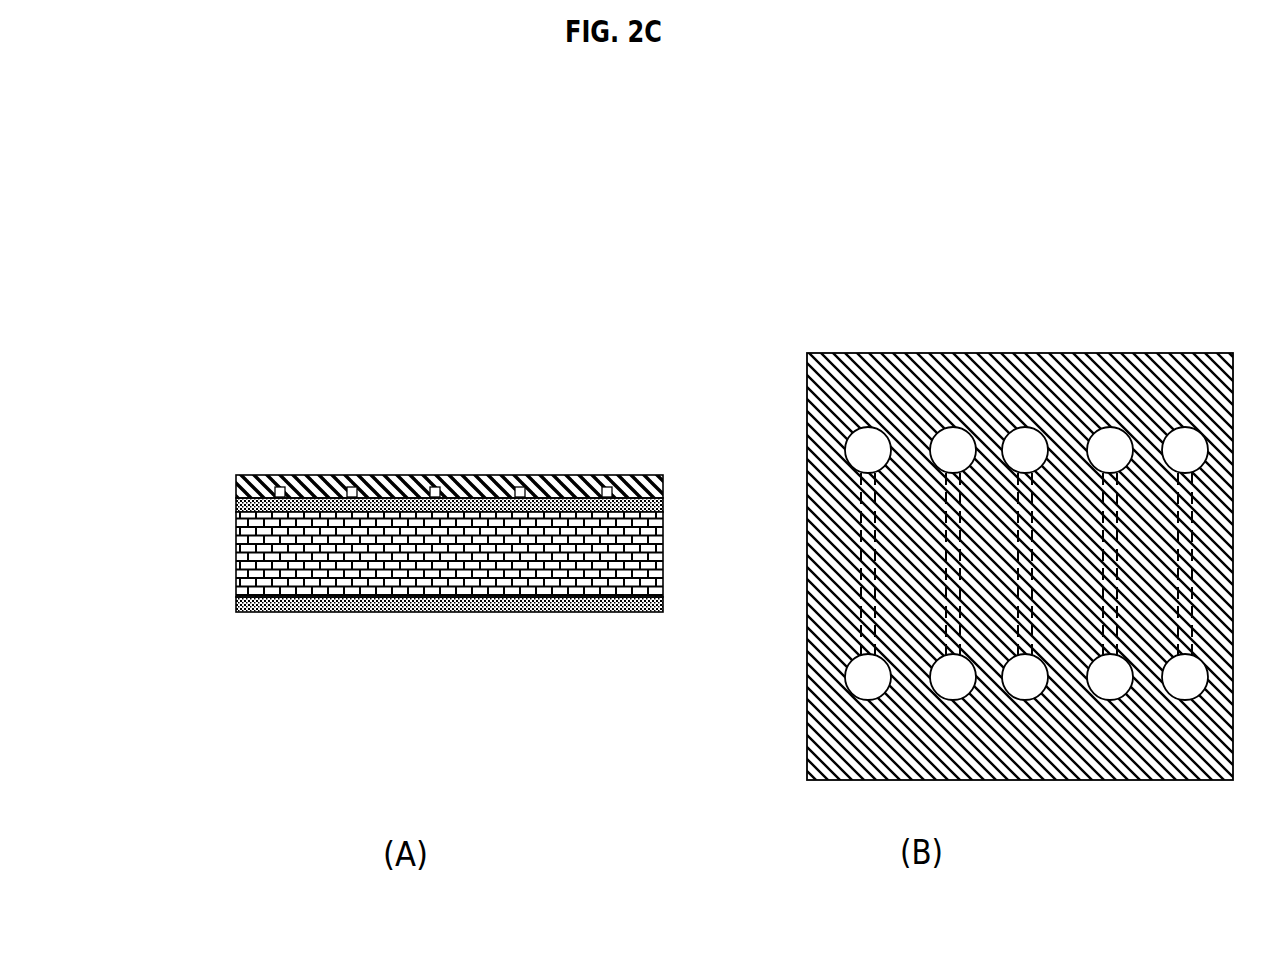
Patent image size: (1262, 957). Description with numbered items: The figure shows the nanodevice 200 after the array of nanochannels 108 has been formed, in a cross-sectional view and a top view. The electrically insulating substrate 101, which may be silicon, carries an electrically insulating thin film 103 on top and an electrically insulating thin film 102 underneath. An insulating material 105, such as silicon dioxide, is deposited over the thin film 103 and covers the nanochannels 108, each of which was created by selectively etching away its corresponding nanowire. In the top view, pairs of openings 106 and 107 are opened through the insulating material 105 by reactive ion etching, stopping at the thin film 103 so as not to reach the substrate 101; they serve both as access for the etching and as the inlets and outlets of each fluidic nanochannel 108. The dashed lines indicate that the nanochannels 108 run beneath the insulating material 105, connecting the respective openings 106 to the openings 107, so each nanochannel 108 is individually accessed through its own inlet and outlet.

The nanodevice 200 is at (337, 190).
The electrically insulating substrate 101 is at (243, 560).
The electrically insulating thin film 102 is at (243, 604).
The electrically insulating thin film 103 is at (243, 506).
The insulating material 105 is at (838, 377).
The opening 106 is at (1178, 436).
The opening 107 is at (1180, 684).
The nanochannel 108 is at (600, 487).